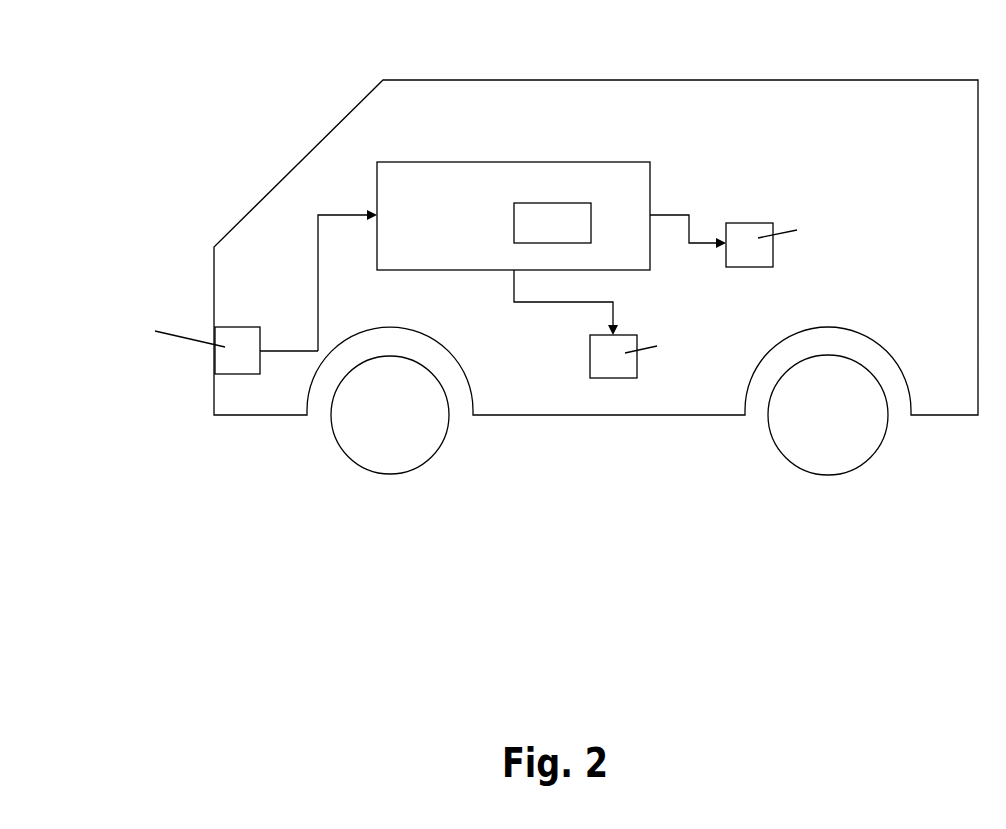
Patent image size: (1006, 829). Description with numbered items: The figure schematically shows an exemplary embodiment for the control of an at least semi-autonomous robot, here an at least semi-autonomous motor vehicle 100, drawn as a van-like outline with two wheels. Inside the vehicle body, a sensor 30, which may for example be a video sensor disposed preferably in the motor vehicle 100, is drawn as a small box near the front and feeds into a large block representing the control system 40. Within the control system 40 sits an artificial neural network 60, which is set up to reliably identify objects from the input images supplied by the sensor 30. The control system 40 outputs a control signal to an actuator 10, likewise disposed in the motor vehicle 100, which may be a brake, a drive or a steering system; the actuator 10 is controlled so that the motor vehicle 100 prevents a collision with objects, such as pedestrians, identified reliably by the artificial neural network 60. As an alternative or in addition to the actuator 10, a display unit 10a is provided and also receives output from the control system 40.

The motor vehicle 100 is at (225, 227).
The control system 40 is at (472, 162).
The artificial neural network 60 is at (555, 202).
The display unit 10a is at (748, 203).
The sensor 30 is at (222, 357).
The actuator 10 is at (610, 378).